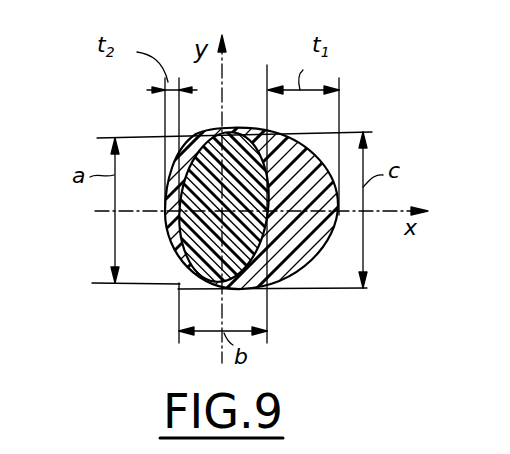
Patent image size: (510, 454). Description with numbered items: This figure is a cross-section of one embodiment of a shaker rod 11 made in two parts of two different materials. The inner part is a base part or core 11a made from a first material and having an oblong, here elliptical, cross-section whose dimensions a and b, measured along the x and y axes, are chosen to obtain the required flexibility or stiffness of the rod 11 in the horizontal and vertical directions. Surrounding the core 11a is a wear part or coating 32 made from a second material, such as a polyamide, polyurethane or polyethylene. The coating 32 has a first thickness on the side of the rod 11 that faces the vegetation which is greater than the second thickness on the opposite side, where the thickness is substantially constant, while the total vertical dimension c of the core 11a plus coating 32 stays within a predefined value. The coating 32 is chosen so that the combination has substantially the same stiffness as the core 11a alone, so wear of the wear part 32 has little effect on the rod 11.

The rod 11 is at (143, 123).
The core 11a is at (182, 255).
The wear part 32 is at (283, 252).